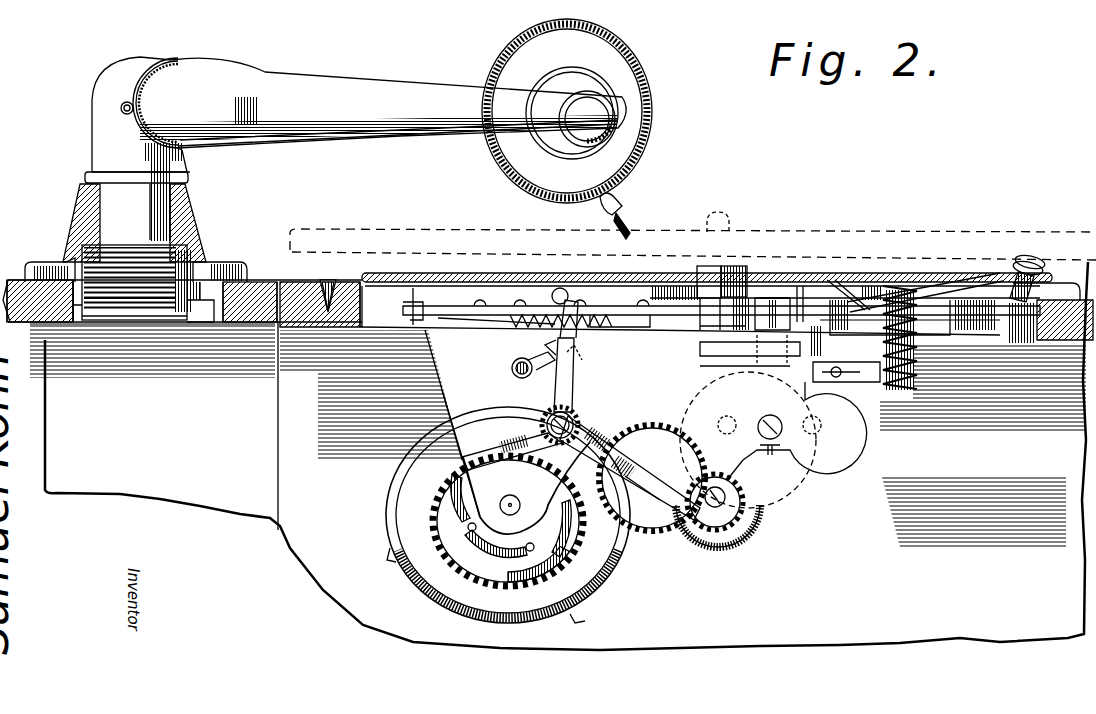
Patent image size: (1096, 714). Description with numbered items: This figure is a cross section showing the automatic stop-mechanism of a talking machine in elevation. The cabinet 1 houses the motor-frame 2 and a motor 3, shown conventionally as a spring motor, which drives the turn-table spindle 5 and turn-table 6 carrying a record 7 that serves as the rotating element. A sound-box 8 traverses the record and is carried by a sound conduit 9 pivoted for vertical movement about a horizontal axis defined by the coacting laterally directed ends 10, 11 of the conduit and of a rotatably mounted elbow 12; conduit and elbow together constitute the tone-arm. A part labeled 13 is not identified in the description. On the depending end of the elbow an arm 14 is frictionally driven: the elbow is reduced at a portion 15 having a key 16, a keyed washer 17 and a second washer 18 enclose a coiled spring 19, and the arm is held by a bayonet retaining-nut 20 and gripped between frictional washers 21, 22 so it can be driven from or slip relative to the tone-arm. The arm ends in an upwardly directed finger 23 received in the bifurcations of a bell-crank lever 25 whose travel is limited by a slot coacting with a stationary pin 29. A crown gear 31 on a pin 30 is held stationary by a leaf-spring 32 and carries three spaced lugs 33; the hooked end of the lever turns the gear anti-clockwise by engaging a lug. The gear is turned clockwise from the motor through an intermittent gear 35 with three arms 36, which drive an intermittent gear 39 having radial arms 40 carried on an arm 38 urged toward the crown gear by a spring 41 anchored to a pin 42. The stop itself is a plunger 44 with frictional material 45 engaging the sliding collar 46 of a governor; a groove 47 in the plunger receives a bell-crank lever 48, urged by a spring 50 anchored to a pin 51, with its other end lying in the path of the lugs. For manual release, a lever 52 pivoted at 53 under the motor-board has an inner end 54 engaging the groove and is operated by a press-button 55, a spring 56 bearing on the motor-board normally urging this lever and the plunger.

The cabinet 1 is at (250, 292).
The motor-frame 2 is at (818, 398).
The motor 3 is at (600, 573).
The turn-table spindle 5 is at (745, 262).
The turn-table 6 is at (862, 246).
The record 7 is at (905, 248).
The sound-box 8 is at (670, 120).
The sound conduit 9 is at (360, 90).
The laterally directed end of conduit 10 is at (186, 72).
The laterally directed end of elbow 11 is at (132, 68).
The elbow 12 is at (105, 152).
The standard 13 is at (104, 218).
The arm 14 is at (256, 328).
The reduced portion 15 is at (62, 262).
The key 16 is at (160, 292).
The washer 17 is at (160, 210).
The second washer 18 is at (168, 282).
The coiled spring 19 is at (76, 304).
The bayonet retaining-nut 20 is at (165, 304).
The frictional washer 21 is at (55, 332).
The frictional washer 22 is at (106, 300).
The finger 23 is at (376, 356).
The bell-crank lever 25 is at (462, 318).
The stationary pin 29 is at (620, 308).
The pin 30 is at (548, 290).
The crown gear 31 is at (505, 318).
The leaf-spring 32 is at (564, 290).
The lugs 33 is at (584, 300).
The intermittent gear 35 is at (590, 430).
The arms 36 is at (630, 470).
The arm 38 is at (562, 345).
The intermittent gear 39 is at (590, 366).
The radial arms 40 is at (580, 340).
The spring 41 is at (499, 372).
The pin 42 is at (524, 352).
The plunger 44 is at (796, 372).
The frictional material 45 is at (770, 362).
The sliding collar 46 is at (826, 445).
The groove 47 is at (805, 284).
The bell-crank lever 48 is at (706, 322).
The spring 50 is at (760, 333).
The pin 51 is at (744, 353).
The lever 52 is at (922, 282).
The pivot 53 is at (960, 292).
The inner end 54 is at (820, 315).
The press-button 55 is at (1065, 248).
The spring 56 is at (880, 286).